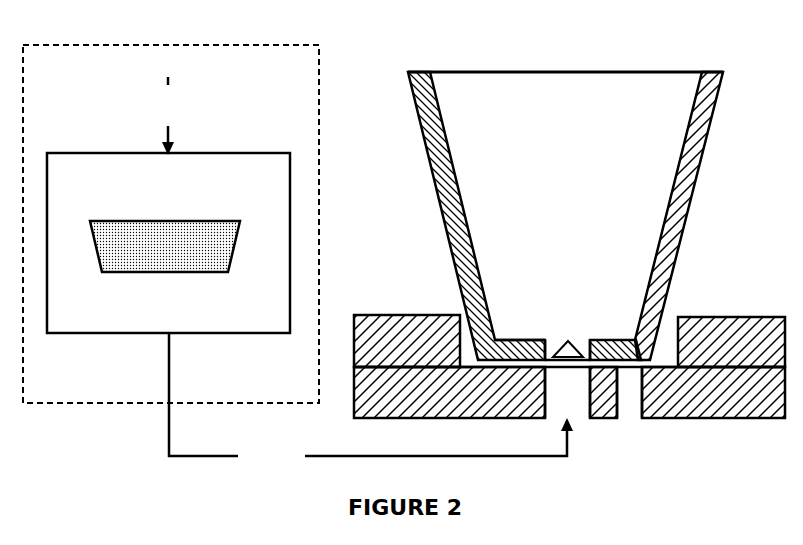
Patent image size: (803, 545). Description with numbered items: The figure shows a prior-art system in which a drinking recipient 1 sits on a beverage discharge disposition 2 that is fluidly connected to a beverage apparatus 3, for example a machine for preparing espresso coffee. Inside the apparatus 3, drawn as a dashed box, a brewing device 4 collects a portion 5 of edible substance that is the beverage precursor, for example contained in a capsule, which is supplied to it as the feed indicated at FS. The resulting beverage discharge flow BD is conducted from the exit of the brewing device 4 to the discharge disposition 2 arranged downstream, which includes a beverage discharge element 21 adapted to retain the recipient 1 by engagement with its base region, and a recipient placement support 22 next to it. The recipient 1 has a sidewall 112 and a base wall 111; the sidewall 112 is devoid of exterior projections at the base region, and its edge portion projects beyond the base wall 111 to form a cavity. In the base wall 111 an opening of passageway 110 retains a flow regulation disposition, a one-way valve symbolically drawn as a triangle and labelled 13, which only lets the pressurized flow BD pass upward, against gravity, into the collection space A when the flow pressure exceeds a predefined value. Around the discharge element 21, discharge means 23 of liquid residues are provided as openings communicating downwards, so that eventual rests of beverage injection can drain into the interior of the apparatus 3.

The drinking recipient 1 is at (553, 200).
The beverage discharge disposition 2 is at (569, 365).
The beverage apparatus 3 is at (171, 207).
The brewing device 4 is at (168, 227).
The portion of edible substance 5 is at (165, 229).
The valve body 13 is at (575, 330).
The beverage discharge element 21 is at (584, 426).
The recipient placement support 22 is at (660, 361).
The discharge means of liquid residues 23 is at (630, 426).
The opening of passageway 110 is at (549, 333).
The base wall 111 is at (518, 333).
The sidewall 112 is at (464, 216).
The collection space A is at (567, 205).
The feed stock FS is at (172, 116).
The beverage discharge flow BD is at (371, 400).